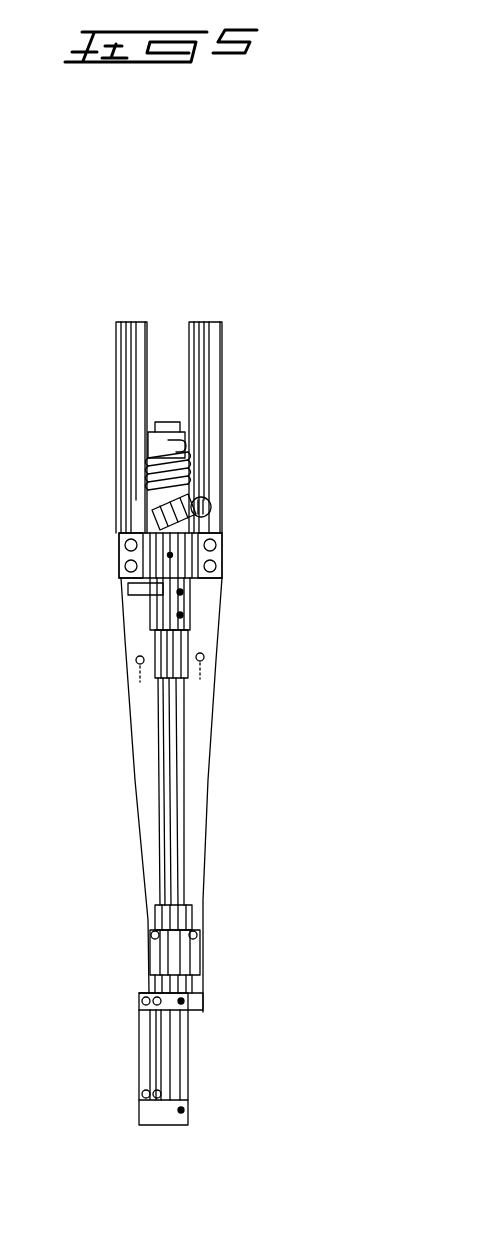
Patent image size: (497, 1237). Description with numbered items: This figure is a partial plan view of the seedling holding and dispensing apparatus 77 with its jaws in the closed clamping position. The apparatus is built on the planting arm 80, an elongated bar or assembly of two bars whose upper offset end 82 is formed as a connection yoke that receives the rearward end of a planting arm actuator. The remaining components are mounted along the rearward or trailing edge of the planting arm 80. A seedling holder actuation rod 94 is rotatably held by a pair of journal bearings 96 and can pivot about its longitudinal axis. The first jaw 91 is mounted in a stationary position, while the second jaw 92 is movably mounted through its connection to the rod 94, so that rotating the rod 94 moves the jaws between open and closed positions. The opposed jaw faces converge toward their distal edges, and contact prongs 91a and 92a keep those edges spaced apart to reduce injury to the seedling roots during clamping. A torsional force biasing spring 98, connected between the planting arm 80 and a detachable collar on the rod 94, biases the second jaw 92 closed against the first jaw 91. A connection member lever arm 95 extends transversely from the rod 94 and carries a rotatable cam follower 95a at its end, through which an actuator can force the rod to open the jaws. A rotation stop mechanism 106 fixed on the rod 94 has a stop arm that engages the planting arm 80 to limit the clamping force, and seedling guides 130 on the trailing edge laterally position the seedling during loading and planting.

The seedling holding and dispensing apparatus 77 is at (280, 395).
The upper offset end 82 is at (125, 345).
The torsional force biasing spring 98 is at (150, 466).
The connection member lever arm 95 is at (152, 508).
The rotatable cam follower 95a is at (212, 500).
The rotation stop mechanism 106 is at (130, 590).
The seedling guides 130 is at (205, 656).
The seedling holder actuation rod 94 is at (165, 795).
The planting arm 80 is at (205, 752).
The journal bearings 96 is at (200, 895).
The first jaw 91 is at (140, 1058).
The contact prong 91a is at (140, 1005).
The second jaw 92 is at (185, 1060).
The contact prong 92a is at (200, 990).